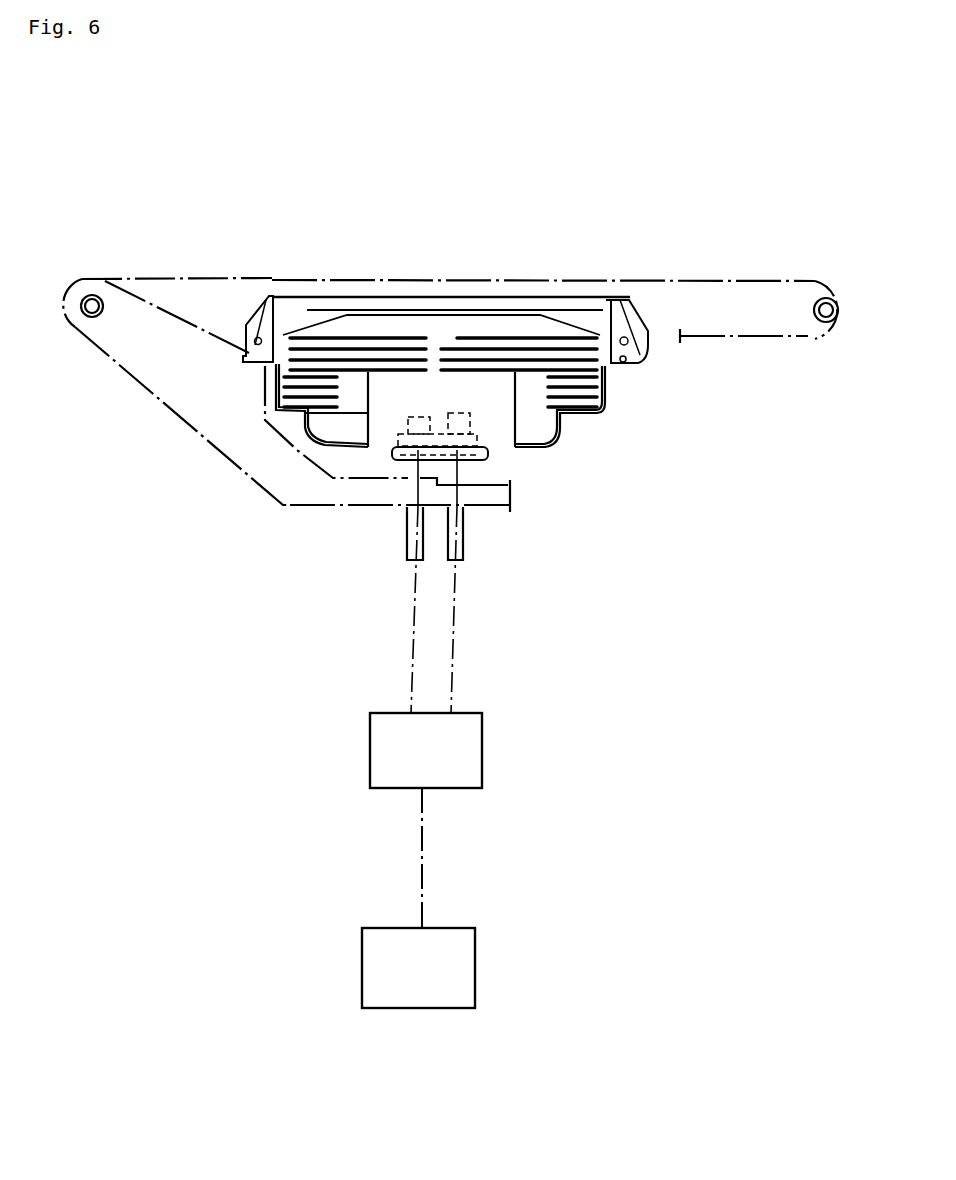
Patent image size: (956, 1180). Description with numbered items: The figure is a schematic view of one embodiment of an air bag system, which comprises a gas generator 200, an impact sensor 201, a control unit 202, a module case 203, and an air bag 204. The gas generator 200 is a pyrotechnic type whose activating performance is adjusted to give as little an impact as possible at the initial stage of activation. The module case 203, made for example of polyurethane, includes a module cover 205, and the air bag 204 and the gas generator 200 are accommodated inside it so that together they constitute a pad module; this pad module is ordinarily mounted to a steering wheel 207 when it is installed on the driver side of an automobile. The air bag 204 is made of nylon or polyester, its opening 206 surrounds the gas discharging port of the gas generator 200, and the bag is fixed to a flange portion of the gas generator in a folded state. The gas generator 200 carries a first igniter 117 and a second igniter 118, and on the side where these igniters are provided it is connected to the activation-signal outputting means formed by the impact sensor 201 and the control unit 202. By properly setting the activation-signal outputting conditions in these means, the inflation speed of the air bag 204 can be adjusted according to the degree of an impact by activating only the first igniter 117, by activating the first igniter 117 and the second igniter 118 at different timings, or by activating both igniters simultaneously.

The first igniter 117 is at (409, 430).
The second igniter 118 is at (463, 423).
The gas generator 200 is at (357, 433).
The impact sensor 201 is at (362, 968).
The control unit 202 is at (370, 748).
The module case 203 is at (592, 297).
The air bag 204 is at (316, 297).
The module cover 205 is at (441, 297).
The opening 206 is at (552, 384).
The steering wheel 207 is at (712, 280).